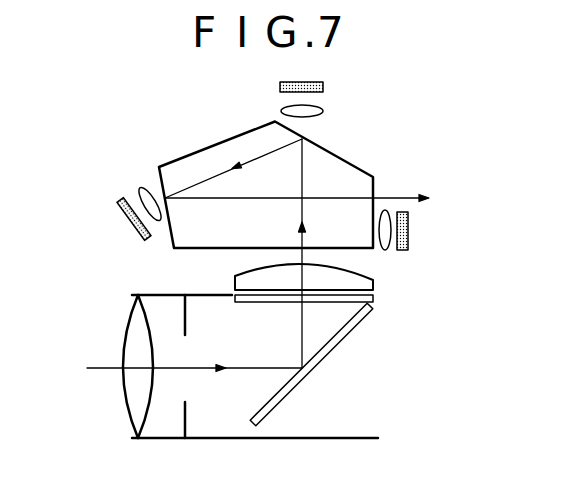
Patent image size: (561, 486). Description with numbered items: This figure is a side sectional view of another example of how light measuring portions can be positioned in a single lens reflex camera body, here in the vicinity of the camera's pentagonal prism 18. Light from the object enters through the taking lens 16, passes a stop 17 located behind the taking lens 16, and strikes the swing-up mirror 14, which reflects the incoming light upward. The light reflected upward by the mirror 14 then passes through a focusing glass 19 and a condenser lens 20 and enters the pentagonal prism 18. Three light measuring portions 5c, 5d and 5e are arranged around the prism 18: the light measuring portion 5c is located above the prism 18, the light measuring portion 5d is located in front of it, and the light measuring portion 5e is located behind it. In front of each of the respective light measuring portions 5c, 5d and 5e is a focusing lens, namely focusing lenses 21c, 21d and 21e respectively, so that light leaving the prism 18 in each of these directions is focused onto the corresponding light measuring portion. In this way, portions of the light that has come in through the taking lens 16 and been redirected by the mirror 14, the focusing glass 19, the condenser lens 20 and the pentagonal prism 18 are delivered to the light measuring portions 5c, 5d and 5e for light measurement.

The light measuring portion 5c is at (323, 88).
The light measuring portion 5d is at (137, 231).
The light measuring portion 5e is at (409, 225).
The mirror 14 is at (278, 397).
The taking lens 16 is at (133, 402).
The stop 17 is at (188, 413).
The pentagonal prism 18 is at (350, 177).
The focusing glass 19 is at (343, 303).
The condenser lens 20 is at (258, 267).
The focusing lens 21c is at (323, 110).
The focusing lens 21d is at (147, 187).
The focusing lens 21e is at (386, 251).